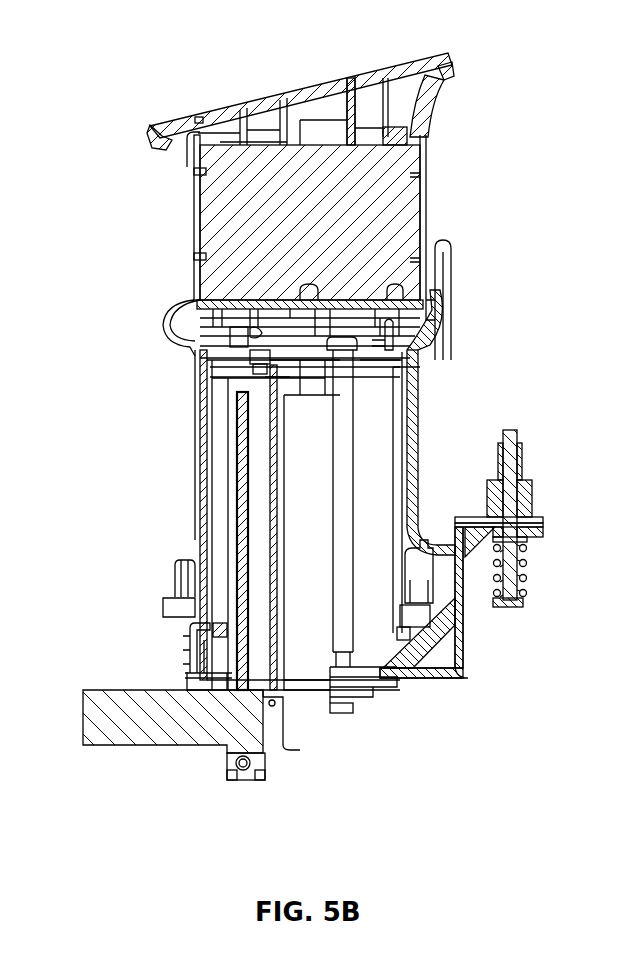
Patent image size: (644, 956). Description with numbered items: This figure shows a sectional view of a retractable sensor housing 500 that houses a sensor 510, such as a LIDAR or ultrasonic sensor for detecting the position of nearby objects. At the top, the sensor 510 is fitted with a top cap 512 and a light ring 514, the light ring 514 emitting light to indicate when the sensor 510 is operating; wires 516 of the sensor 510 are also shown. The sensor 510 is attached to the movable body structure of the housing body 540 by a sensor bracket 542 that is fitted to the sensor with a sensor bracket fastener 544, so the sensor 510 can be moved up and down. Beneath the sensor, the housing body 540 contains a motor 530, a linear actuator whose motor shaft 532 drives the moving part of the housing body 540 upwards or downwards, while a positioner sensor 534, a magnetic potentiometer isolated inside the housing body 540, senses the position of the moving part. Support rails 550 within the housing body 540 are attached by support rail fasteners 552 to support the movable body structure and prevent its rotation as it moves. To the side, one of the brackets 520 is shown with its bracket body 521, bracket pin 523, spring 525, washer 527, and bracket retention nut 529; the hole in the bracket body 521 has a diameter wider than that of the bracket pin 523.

The retractable sensor housing 500 is at (231, 64).
The sensor 510 is at (427, 198).
The top cap 512 is at (430, 53).
The light ring 514 is at (460, 70).
The wires 516 is at (441, 325).
The brackets 520 is at (543, 520).
The bracket body 521 is at (540, 518).
The bracket pin 523 is at (507, 430).
The spring 525 is at (527, 572).
The washer 527 is at (543, 534).
The bracket retention nut 529 is at (522, 458).
The motor 530 is at (152, 745).
The motor shaft 532 is at (240, 520).
The positioner sensor 534 is at (283, 607).
The housing body 540 is at (193, 402).
The sensor bracket 542 is at (406, 302).
The sensor bracket fastener 544 is at (302, 292).
The support rails 550 is at (353, 472).
The support rail fasteners 552 is at (352, 710).